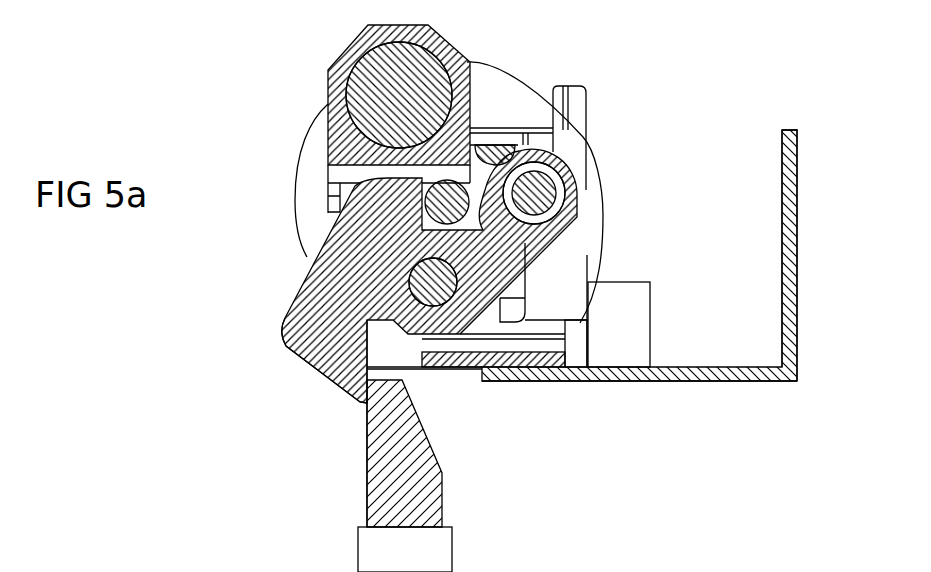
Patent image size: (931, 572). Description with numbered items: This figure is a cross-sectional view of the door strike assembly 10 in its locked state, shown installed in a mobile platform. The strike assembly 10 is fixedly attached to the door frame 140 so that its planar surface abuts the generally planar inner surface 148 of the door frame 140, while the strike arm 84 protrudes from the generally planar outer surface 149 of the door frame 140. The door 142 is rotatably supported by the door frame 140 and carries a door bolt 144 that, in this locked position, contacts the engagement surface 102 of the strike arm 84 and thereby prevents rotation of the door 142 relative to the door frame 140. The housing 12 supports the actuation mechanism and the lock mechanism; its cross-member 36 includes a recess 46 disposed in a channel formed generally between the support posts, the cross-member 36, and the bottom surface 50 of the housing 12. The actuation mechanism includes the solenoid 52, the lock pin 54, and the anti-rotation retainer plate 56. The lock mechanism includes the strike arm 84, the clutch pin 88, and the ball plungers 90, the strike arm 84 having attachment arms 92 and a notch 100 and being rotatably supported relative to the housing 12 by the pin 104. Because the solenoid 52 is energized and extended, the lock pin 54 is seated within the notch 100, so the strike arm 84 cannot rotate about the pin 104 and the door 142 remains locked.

The door strike assembly 10 is at (176, 40).
The housing 12 is at (656, 303).
The cross-member 36 is at (354, 50).
The recess 46 is at (340, 176).
The bottom surface 50 is at (527, 350).
The solenoid 52 is at (608, 216).
The lock pin 54 is at (480, 175).
The anti-rotation retainer plate 56 is at (590, 119).
The strike arm 84 is at (305, 271).
The clutch pin 88 is at (562, 181).
The ball plungers 90 is at (452, 60).
The attachment arms 92 is at (288, 318).
The notch 100 is at (428, 180).
The engagement surface 102 is at (366, 403).
The pin 104 is at (453, 310).
The door frame 140 is at (772, 388).
The door 142 is at (456, 547).
The door bolt 144 is at (363, 496).
The inner surface 148 is at (760, 365).
The outer surface 149 is at (710, 382).